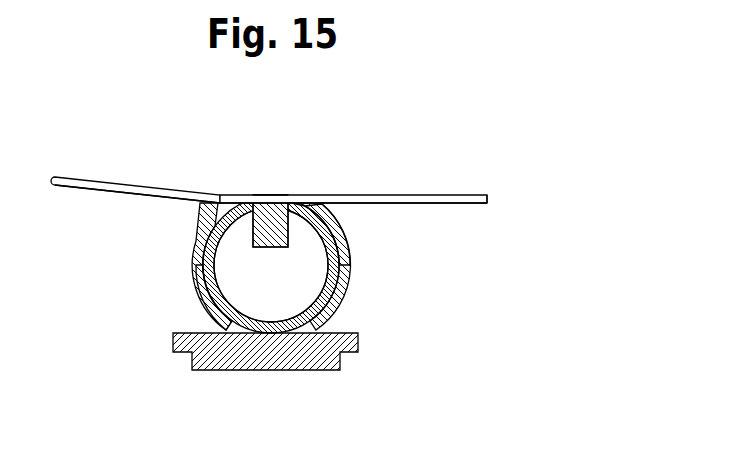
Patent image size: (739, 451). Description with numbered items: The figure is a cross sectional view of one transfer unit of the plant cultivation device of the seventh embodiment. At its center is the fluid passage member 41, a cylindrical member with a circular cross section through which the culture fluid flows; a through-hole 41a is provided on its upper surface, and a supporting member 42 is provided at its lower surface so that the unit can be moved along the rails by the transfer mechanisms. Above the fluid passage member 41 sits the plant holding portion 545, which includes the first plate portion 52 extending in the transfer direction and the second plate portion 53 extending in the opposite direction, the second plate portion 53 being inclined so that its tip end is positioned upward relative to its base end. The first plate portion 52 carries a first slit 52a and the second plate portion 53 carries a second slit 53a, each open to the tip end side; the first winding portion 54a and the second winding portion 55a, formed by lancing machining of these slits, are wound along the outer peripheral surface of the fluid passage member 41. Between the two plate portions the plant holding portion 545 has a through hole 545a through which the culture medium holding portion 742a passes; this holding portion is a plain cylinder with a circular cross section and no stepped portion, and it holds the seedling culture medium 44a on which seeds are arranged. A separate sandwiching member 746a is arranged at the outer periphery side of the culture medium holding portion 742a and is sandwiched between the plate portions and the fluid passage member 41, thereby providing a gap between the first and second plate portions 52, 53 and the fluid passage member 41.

The fluid passage member 41 is at (343, 300).
The through-hole 41a is at (280, 248).
The supporting member 42 is at (325, 369).
The seedling culture medium 44a is at (280, 195).
The first plate portion 52 is at (390, 195).
The first slit 52a is at (438, 204).
The second plate portion 53 is at (100, 177).
The second slit 53a is at (123, 197).
The first winding portion 54a is at (352, 278).
The second winding portion 55a is at (212, 312).
The plant holding portion 545 is at (486, 192).
The through hole 545a is at (262, 195).
The culture medium holding portion 742a is at (340, 214).
The sandwiching member 746a is at (222, 207).